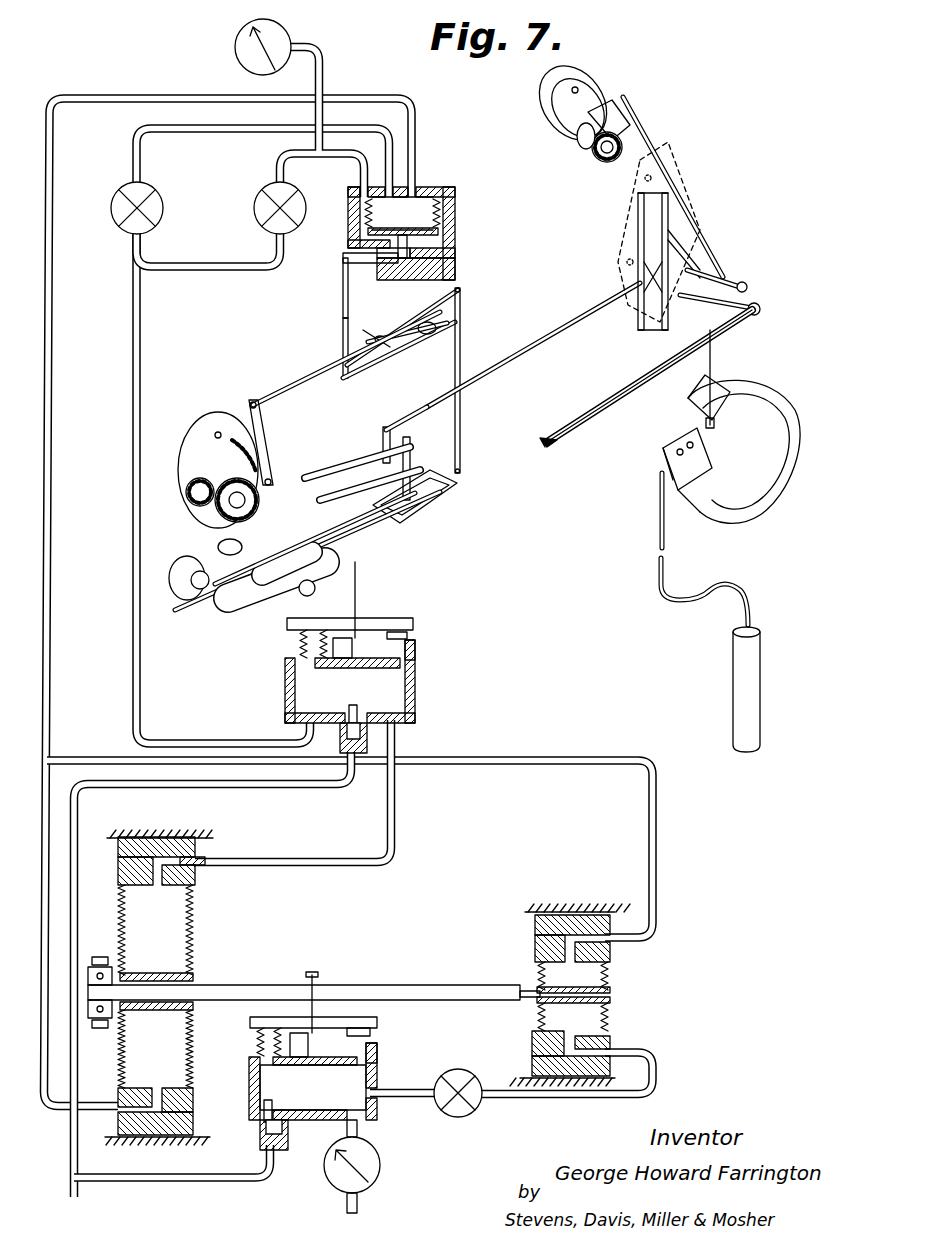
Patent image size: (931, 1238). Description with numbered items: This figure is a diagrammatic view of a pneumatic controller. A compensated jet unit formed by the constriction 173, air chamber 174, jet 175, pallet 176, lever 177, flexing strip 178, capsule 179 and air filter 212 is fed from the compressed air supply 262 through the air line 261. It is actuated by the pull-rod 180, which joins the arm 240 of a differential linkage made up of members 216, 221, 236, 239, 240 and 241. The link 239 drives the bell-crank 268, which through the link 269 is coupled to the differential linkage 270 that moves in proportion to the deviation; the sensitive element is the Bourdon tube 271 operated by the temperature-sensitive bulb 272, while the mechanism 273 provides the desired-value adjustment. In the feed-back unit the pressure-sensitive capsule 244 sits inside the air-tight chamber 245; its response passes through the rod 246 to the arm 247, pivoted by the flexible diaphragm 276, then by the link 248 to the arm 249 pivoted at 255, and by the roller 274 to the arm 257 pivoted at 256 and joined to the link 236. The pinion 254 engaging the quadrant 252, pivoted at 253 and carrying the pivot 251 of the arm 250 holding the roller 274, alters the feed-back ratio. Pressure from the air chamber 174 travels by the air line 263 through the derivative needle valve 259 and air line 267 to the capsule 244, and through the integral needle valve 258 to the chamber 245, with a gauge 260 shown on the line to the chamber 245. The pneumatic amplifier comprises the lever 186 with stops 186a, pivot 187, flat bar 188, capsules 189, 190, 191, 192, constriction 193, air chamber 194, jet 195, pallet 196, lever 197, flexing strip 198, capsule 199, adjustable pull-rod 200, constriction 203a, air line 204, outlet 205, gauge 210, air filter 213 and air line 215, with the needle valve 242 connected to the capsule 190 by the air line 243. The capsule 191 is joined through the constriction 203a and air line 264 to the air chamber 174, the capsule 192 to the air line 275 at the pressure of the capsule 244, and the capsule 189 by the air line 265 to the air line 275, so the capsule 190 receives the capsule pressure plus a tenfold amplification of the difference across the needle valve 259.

The constriction 173 is at (352, 715).
The air chamber 174 is at (350, 681).
The jet 175 is at (410, 655).
The pallet 176 is at (407, 637).
The lever 177 is at (370, 625).
The flexing strip 178 is at (358, 649).
The capsule 179 is at (297, 650).
The pull-rod 180 is at (355, 580).
The lever 186 is at (270, 986).
The stops 186a is at (98, 1030).
The pivot 187 is at (522, 1000).
The flat bar 188 is at (605, 995).
The capsule 189 is at (600, 978).
The capsule 190 is at (600, 1016).
The capsule 191 is at (160, 905).
The capsule 192 is at (157, 1073).
The constriction 193 is at (313, 1087).
The air chamber 194 is at (313, 1081).
The jet 195 is at (371, 1050).
The pallet 196 is at (365, 1032).
The lever 197 is at (330, 1026).
The flexing strip 198 is at (300, 1040).
The capsule 199 is at (260, 1045).
The adjustable pull-rod 200 is at (310, 992).
The constriction 203a is at (198, 867).
The air line 204 is at (420, 1097).
The outlet 205 is at (374, 1204).
The gauge 210 is at (370, 1163).
The air filter 212 is at (340, 750).
The air filter 213 is at (279, 1152).
The air line 215 is at (205, 1179).
The link 216 is at (372, 548).
The link 221 is at (305, 540).
The link 236 is at (462, 414).
The link 239 is at (410, 470).
The arm 240 is at (415, 510).
The link 241 is at (358, 517).
The needle valve 242 is at (471, 1100).
The air line 243 is at (585, 1098).
The pressure-sensitive capsule 244 is at (425, 224).
The air-tight chamber 245 is at (455, 211).
The rod 246 is at (455, 254).
The arm 247 is at (343, 282).
The link 248 is at (343, 320).
The arm 249 is at (384, 358).
The arm 250 is at (275, 398).
The pivot 251 is at (252, 402).
The quadrant 252 is at (265, 440).
The pivot 253 is at (270, 486).
The pinion 254 is at (190, 492).
The pivot 255 is at (460, 321).
The pivot 256 is at (375, 333).
The arm 257 is at (445, 306).
The needle valve 258 is at (290, 210).
The needle valve 259 is at (147, 210).
The gauge 260 is at (272, 46).
The air line 261 is at (340, 790).
The compressed air supply 262 is at (68, 1186).
The air line 263 is at (250, 742).
The air line 264 is at (326, 862).
The air line 265 is at (548, 762).
The air line 267 is at (248, 132).
The bell-crank 268 is at (383, 432).
The link 269 is at (535, 360).
The differential linkage 270 is at (633, 275).
The Bourdon tube 271 is at (752, 490).
The temperature-sensitive bulb 272 is at (740, 673).
The mechanism 273 is at (630, 130).
The roller 274 is at (426, 335).
The air line 275 is at (53, 538).
The flexible diaphragm 276 is at (343, 257).